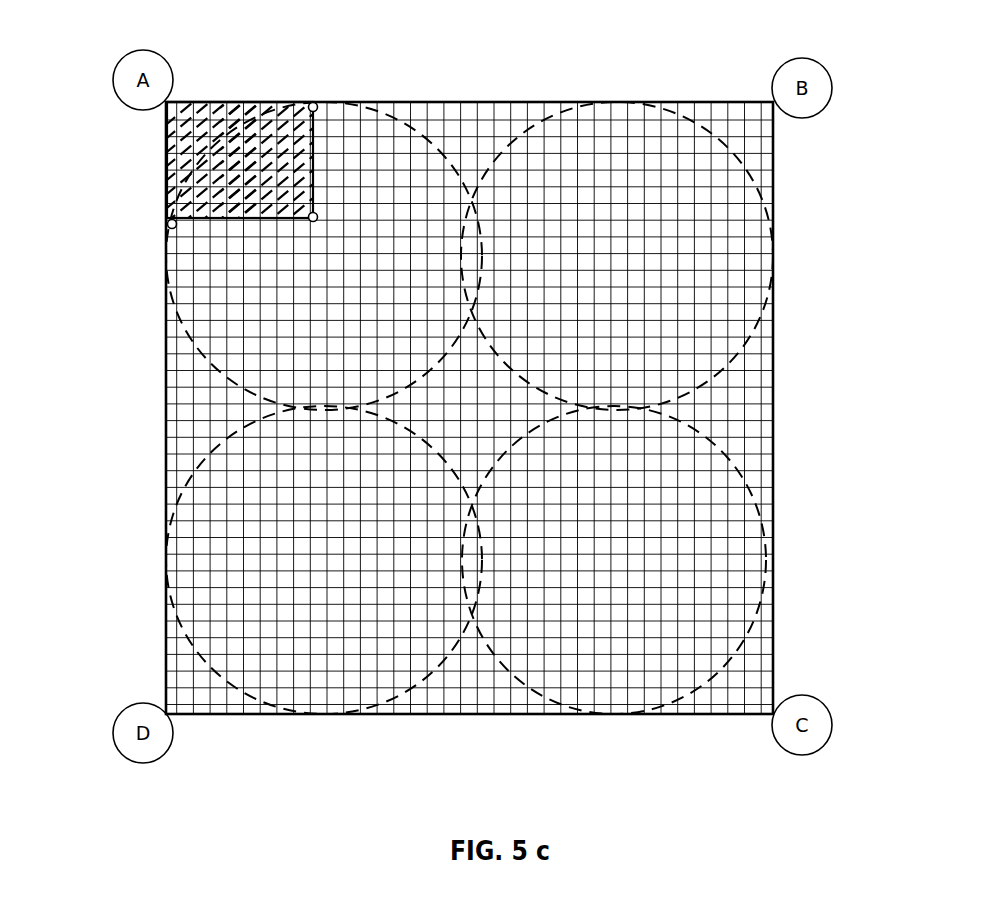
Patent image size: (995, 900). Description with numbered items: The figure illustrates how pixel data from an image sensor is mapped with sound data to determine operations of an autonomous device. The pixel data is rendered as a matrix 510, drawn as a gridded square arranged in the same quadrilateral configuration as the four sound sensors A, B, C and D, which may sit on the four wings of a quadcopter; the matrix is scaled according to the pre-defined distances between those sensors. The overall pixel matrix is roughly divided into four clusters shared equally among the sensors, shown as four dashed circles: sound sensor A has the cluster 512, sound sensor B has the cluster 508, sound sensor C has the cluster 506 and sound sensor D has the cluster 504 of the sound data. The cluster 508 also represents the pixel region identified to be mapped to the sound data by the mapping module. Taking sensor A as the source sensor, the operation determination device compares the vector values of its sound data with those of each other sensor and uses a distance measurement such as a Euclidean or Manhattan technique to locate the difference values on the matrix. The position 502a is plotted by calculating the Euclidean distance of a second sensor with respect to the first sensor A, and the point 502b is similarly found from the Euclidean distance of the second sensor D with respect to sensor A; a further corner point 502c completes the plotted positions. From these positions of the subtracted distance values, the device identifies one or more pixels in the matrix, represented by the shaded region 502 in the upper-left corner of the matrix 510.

The shaded region 502 is at (290, 148).
The position 502a is at (310, 219).
The point 502b is at (169, 226).
The corner point of section 502c is at (316, 104).
The cluster 504 is at (773, 232).
The cluster 506 is at (763, 557).
The cluster 508 is at (175, 545).
The matrix 510 is at (167, 402).
The cluster 512 is at (190, 340).